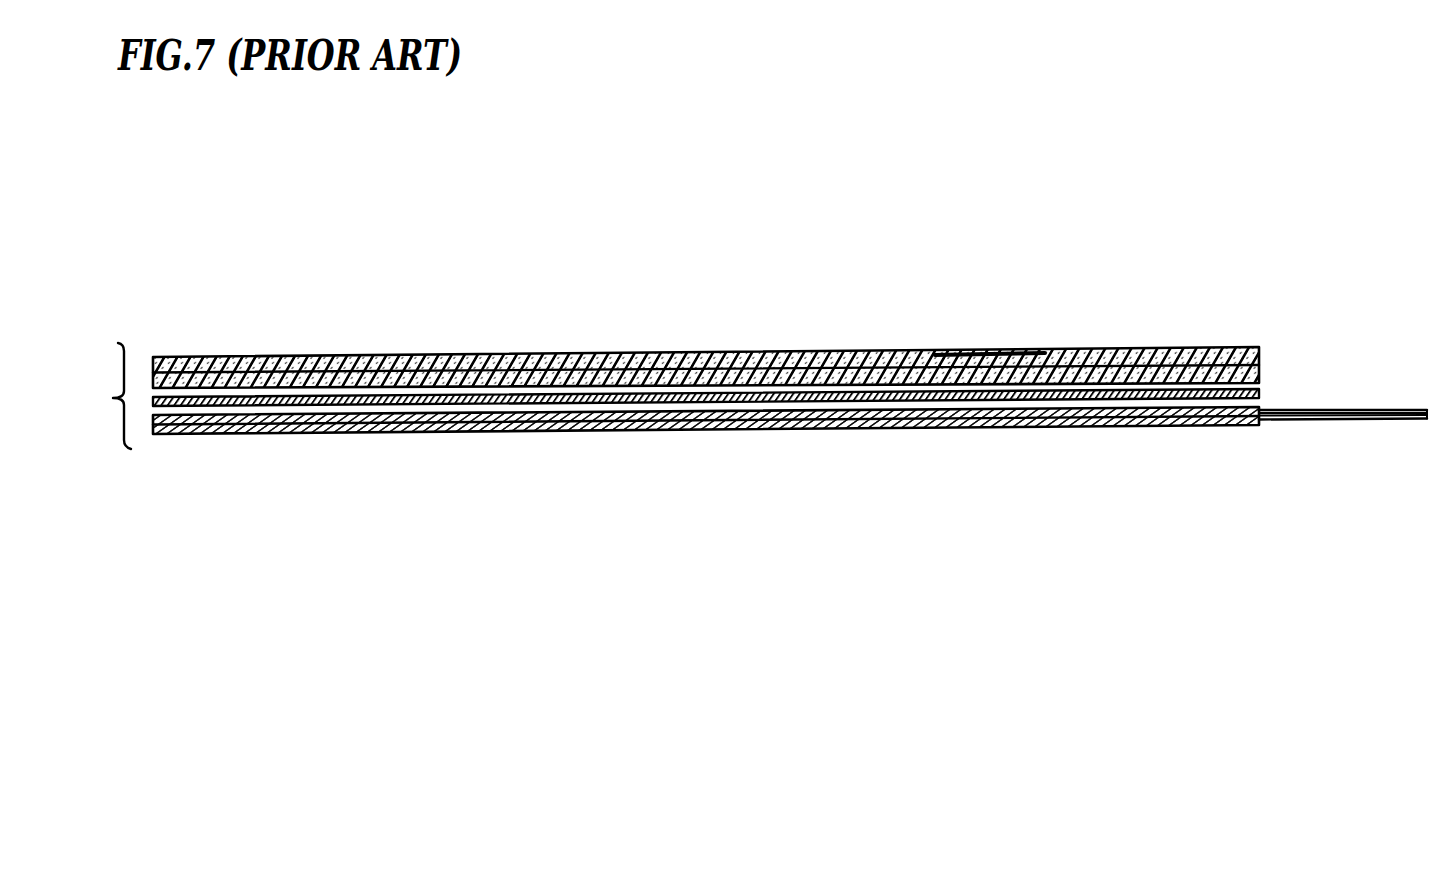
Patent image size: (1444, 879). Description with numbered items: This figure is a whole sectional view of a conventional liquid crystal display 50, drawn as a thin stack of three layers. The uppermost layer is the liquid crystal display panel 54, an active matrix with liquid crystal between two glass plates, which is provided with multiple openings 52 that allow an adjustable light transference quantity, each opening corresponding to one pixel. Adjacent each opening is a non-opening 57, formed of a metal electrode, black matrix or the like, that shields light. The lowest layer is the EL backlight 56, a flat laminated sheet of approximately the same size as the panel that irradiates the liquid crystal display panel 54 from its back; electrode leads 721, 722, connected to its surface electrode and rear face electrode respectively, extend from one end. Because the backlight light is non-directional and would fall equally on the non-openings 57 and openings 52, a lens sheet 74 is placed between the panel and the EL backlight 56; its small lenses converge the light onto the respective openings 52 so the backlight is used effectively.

The liquid crystal display 50 is at (118, 372).
The opening 52 is at (1003, 353).
The liquid crystal display panel 54 is at (1182, 350).
The EL backlight 56 is at (1125, 565).
The non-opening 57 is at (960, 353).
The lens sheet 74 is at (741, 401).
The electrode lead 721 is at (1344, 420).
The electrode lead 722 is at (1343, 455).